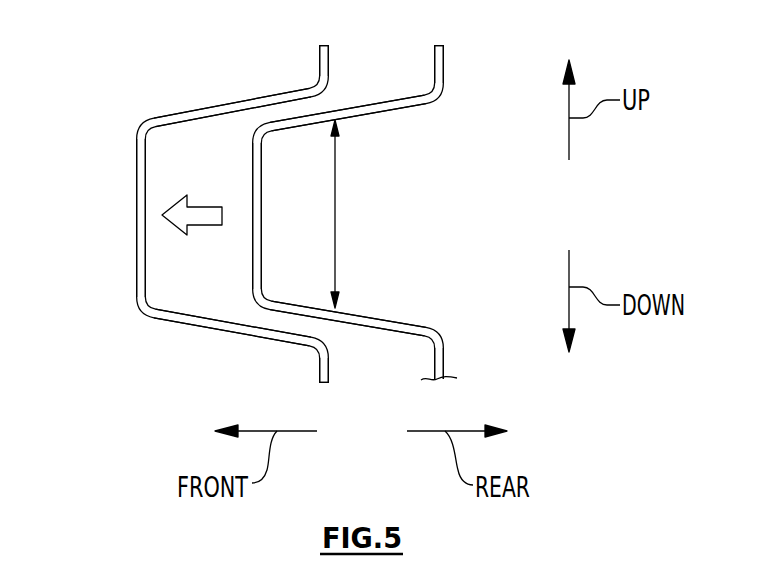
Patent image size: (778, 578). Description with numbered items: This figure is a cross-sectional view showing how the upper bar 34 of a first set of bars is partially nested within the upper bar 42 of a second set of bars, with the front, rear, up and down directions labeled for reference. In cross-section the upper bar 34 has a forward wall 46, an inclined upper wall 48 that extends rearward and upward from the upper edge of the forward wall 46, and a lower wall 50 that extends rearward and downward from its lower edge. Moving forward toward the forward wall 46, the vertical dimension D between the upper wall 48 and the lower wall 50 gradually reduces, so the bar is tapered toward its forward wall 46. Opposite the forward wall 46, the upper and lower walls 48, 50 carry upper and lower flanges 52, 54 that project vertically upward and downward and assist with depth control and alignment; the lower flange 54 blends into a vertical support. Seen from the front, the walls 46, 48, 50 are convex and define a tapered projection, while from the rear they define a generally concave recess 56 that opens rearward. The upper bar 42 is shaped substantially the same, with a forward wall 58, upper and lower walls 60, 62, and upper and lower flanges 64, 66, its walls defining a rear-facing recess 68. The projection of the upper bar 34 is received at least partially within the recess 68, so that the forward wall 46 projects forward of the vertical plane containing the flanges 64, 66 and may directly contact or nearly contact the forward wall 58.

The upper bar 34 is at (409, 75).
The upper bar 42 is at (159, 90).
The forward wall 46 is at (263, 208).
The inclined upper wall 48 is at (388, 104).
The lower wall 50 is at (383, 328).
The upper flange 52 is at (443, 61).
The lower flange 54 is at (444, 362).
The recess 56 is at (404, 212).
The forward wall 58 is at (137, 193).
The upper wall 60 is at (233, 102).
The lower wall 62 is at (238, 327).
The upper flange 64 is at (318, 62).
The lower flange 66 is at (320, 368).
The recess 68 is at (208, 172).
The vertical dimension D is at (337, 243).